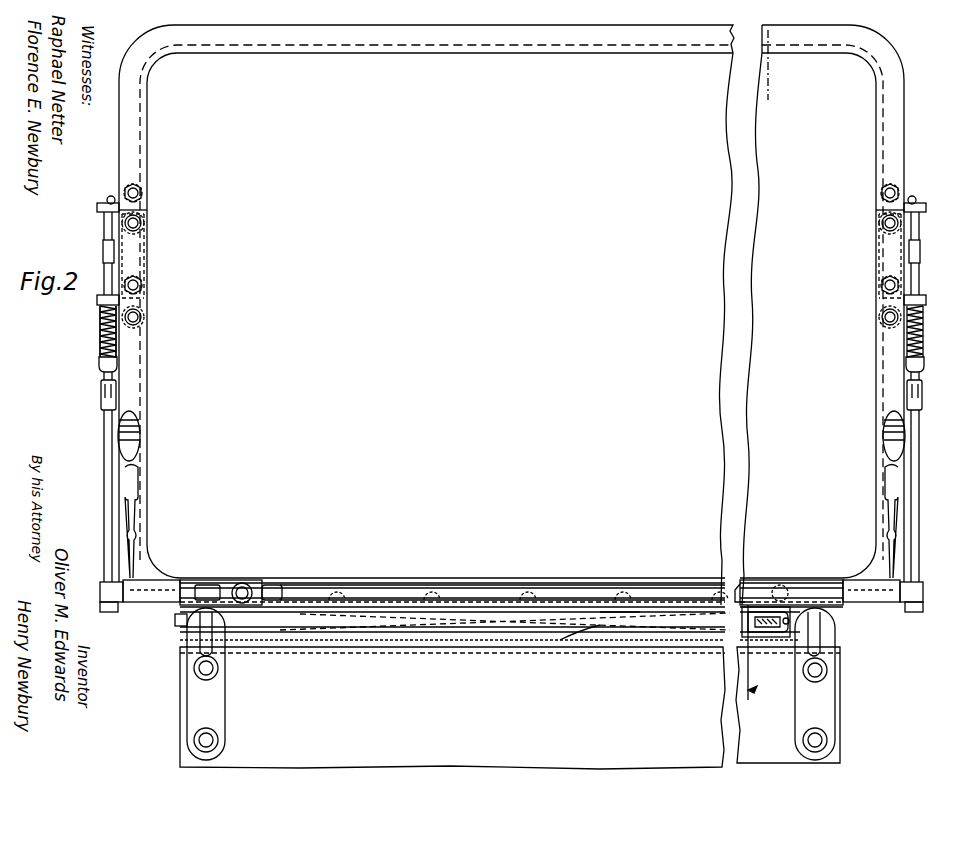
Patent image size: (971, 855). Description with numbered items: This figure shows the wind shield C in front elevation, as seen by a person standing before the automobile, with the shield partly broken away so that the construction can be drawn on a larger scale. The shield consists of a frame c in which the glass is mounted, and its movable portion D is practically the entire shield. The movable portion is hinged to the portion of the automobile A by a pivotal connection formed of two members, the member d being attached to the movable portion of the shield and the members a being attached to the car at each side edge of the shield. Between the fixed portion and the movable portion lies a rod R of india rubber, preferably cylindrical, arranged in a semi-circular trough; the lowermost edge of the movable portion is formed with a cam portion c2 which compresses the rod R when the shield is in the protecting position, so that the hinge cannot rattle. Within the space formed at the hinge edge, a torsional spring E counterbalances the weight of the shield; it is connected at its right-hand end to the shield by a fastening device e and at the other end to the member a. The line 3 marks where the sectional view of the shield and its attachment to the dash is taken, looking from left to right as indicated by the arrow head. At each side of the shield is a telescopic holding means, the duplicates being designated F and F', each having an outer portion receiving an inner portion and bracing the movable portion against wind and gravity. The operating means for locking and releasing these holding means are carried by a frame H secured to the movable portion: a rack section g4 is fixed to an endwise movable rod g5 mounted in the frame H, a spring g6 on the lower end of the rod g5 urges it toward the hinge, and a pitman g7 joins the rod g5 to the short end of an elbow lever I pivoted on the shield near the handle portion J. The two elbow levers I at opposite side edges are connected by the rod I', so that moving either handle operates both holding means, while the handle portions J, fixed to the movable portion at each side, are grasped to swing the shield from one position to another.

The wind shield C is at (511, 305).
The frame c is at (511, 296).
The section line 3 is at (764, 360).
The frame H is at (511, 256).
The section of a rack g4 is at (103, 250).
The endwise movable rod g5 is at (104, 220).
The spring g6 is at (106, 350).
The pitman g7 is at (104, 544).
The telescopic holding means F is at (521, 326).
The telescopic holding means F' is at (94, 331).
The elbow lever I is at (511, 436).
The handle portion J is at (134, 482).
The movable portion of the wind shield D is at (511, 576).
The rod I' is at (471, 573).
The hinge member d is at (246, 582).
The rubber rod R is at (320, 645).
The cam portion c2 is at (436, 640).
The torsional spring E is at (612, 625).
The fastening device e is at (784, 625).
The portion of the automobile A is at (510, 708).
The hinge member a is at (505, 684).